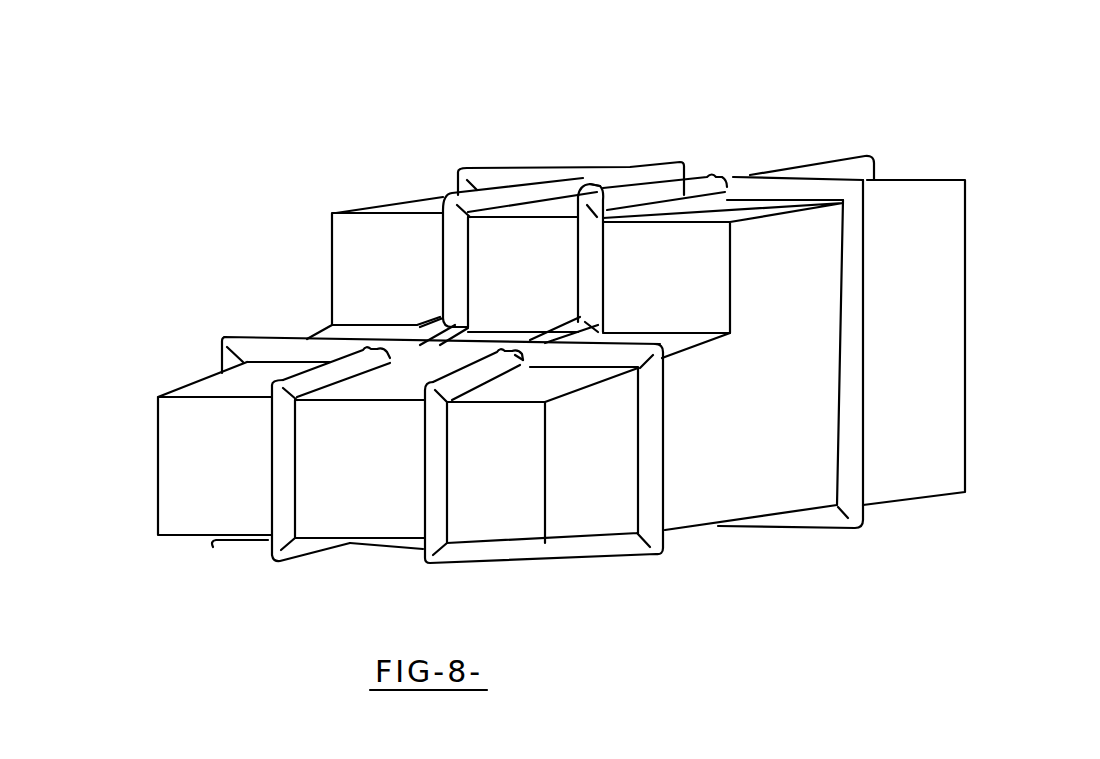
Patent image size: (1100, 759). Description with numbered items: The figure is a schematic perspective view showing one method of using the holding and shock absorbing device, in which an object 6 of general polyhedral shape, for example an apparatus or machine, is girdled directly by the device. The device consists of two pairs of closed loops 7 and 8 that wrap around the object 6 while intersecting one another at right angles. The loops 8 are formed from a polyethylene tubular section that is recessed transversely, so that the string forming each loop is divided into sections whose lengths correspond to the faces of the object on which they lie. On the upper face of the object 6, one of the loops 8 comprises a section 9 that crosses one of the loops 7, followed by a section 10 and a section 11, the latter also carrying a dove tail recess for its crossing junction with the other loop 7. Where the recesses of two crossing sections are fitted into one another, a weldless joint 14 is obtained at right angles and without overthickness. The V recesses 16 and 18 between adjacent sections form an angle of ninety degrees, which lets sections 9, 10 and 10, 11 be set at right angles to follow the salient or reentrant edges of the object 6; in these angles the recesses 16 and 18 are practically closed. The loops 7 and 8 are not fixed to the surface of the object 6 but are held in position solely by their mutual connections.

The object 6 is at (965, 275).
The closed loops 7 is at (631, 558).
The closed loops 8 is at (412, 483).
The section 9 is at (495, 368).
The section 10 is at (589, 265).
The section 11 is at (820, 158).
The weldless joint 14 is at (520, 373).
The V recess 16 is at (598, 322).
The V recess 18 is at (604, 208).